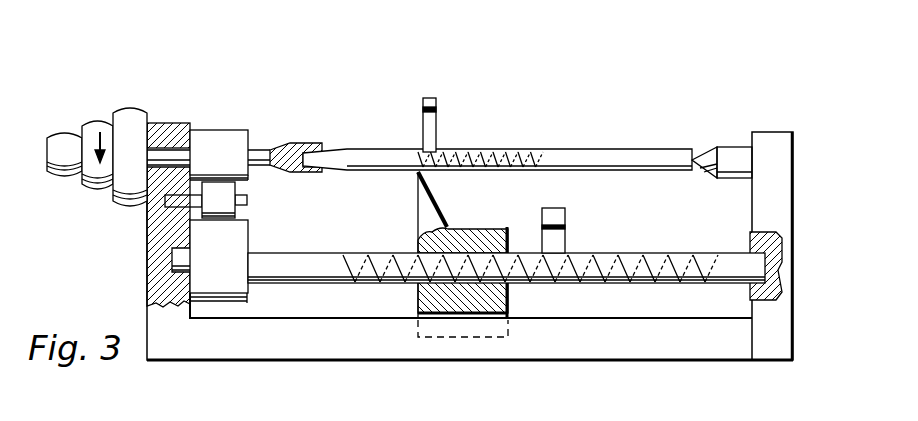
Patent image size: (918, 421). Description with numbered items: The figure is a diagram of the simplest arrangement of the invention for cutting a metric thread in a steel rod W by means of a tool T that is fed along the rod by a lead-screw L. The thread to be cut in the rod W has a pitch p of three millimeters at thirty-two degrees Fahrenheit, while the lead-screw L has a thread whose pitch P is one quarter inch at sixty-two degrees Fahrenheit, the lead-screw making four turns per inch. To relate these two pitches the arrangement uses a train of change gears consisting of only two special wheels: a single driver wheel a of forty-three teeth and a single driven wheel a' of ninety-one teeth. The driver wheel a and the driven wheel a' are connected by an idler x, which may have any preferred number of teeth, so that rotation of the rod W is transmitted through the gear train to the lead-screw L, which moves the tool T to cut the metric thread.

The steel rod W is at (378, 153).
The lead-screw L is at (338, 255).
The tool T is at (428, 209).
The idler x is at (206, 200).
The driver wheel a is at (219, 155).
The driven wheel a' is at (219, 261).
The pitch of the metric thread p is at (428, 100).
The pitch of the lead-screw P is at (548, 222).